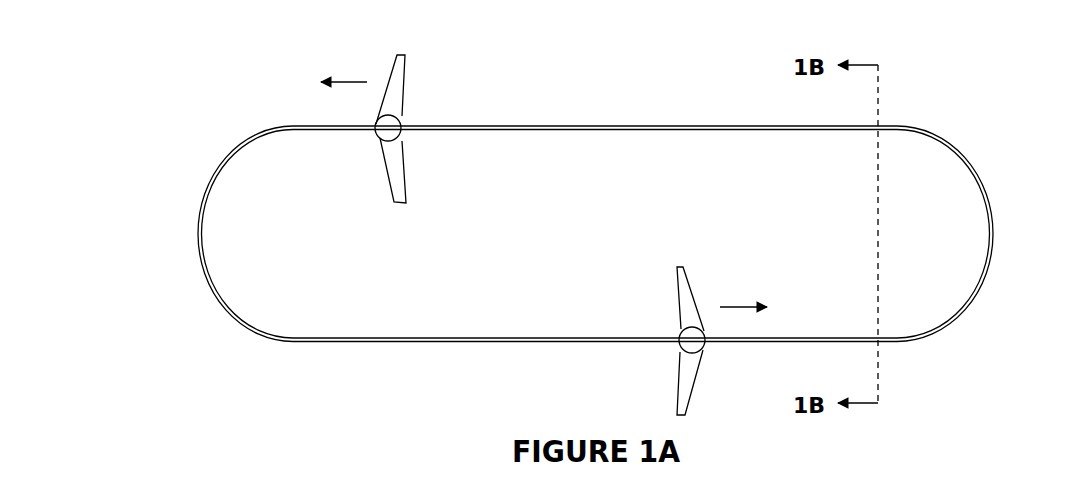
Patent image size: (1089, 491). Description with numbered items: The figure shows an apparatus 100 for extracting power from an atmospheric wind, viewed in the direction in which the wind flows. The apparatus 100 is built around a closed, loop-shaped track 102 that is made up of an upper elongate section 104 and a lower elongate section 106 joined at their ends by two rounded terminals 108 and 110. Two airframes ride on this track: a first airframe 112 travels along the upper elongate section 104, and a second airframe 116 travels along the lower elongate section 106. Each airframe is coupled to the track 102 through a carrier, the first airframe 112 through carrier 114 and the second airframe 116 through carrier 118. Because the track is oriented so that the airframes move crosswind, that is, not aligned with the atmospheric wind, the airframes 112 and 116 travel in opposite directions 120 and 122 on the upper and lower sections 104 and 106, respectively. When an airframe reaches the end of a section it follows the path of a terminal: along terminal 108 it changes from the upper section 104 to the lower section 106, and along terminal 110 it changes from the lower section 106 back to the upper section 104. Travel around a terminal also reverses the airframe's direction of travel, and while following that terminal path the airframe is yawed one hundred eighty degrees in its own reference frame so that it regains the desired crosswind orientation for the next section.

The apparatus 100 is at (117, 52).
The track 102 is at (979, 160).
The upper elongate section 104 is at (597, 124).
The lower elongate section 106 is at (522, 343).
The terminal 108 is at (198, 240).
The terminal 110 is at (994, 233).
The airframe 112 is at (403, 83).
The carrier 114 is at (394, 122).
The airframe 116 is at (676, 385).
The carrier 118 is at (680, 345).
The direction 120 is at (367, 82).
The direction 122 is at (740, 307).